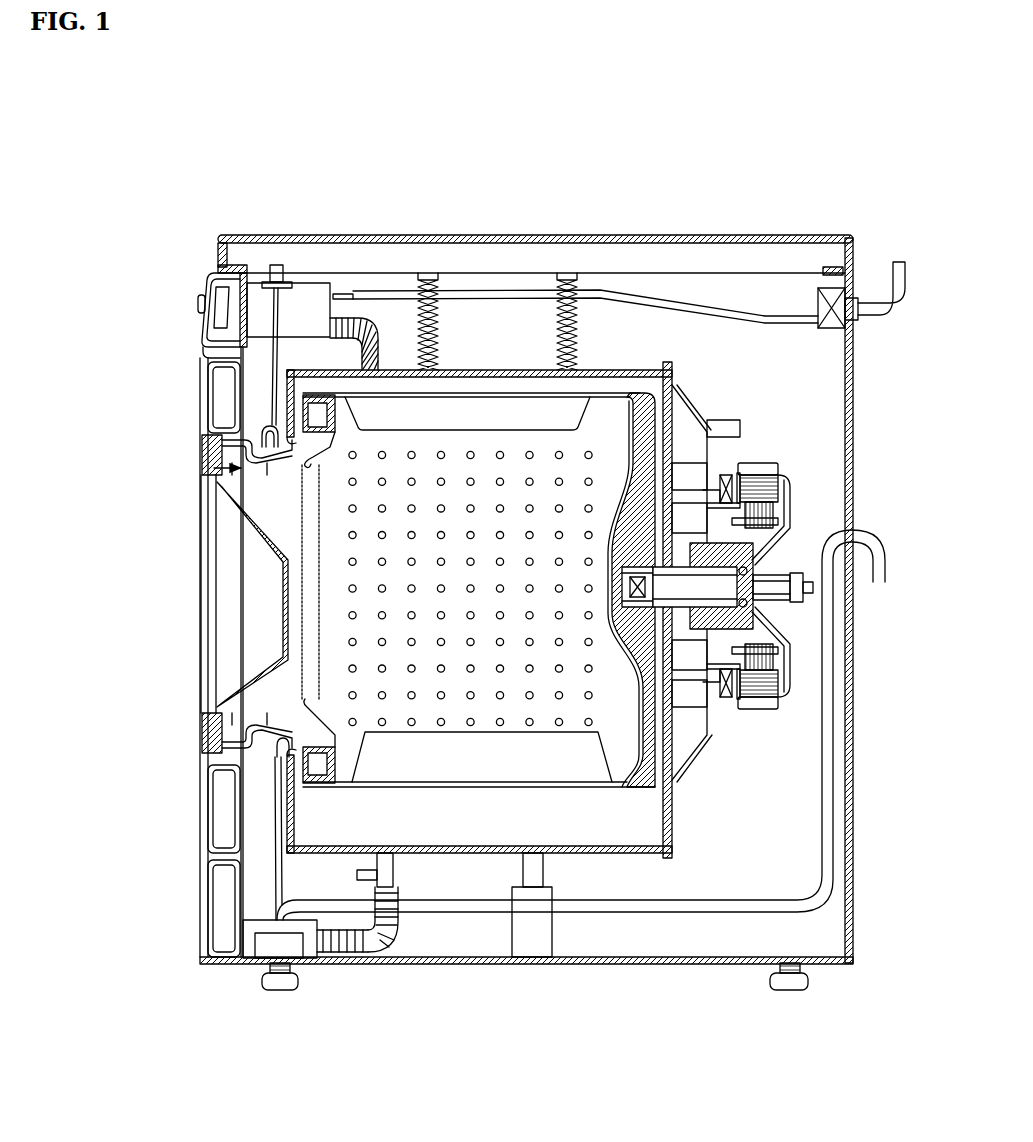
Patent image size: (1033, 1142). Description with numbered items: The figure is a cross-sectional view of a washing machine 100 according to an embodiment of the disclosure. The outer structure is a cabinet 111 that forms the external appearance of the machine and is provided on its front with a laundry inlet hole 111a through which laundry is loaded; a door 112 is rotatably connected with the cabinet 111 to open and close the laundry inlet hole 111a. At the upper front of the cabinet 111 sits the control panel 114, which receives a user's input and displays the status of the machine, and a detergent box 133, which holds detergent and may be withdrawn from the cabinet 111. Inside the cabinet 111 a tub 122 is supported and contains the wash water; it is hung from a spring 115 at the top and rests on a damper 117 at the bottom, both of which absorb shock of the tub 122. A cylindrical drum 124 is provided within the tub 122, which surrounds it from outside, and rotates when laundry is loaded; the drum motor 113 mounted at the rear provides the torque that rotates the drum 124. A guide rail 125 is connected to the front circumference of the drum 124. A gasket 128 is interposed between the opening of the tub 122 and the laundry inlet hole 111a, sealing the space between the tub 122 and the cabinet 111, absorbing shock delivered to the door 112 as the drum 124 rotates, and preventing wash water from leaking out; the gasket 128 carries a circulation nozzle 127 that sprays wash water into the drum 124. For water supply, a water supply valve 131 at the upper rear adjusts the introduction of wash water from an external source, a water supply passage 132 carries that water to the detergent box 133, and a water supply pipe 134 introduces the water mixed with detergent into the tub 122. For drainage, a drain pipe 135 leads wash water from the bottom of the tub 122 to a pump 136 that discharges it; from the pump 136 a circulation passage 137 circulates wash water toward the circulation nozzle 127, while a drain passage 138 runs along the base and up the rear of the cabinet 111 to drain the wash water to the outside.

The washing machine 100 is at (332, 190).
The cabinet 111 is at (853, 903).
The laundry inlet hole 111a is at (214, 469).
The door 112 is at (224, 597).
The drum motor 113 is at (806, 689).
The control panel 114 is at (212, 321).
The spring 115 is at (568, 276).
The damper 117 is at (541, 932).
The tub 122 is at (641, 442).
The drum 124 is at (670, 433).
The guide rail 125 is at (308, 766).
The circulation nozzle 127 is at (267, 433).
The gasket 128 is at (236, 446).
The water supply valve 131 is at (830, 296).
The water supply passage 132 is at (682, 305).
The detergent box 133 is at (316, 290).
The water supply pipe 134 is at (366, 326).
The drain pipe 135 is at (373, 942).
The pump 136 is at (270, 948).
The circulation passage 137 is at (270, 843).
The drain passage 138 is at (428, 905).